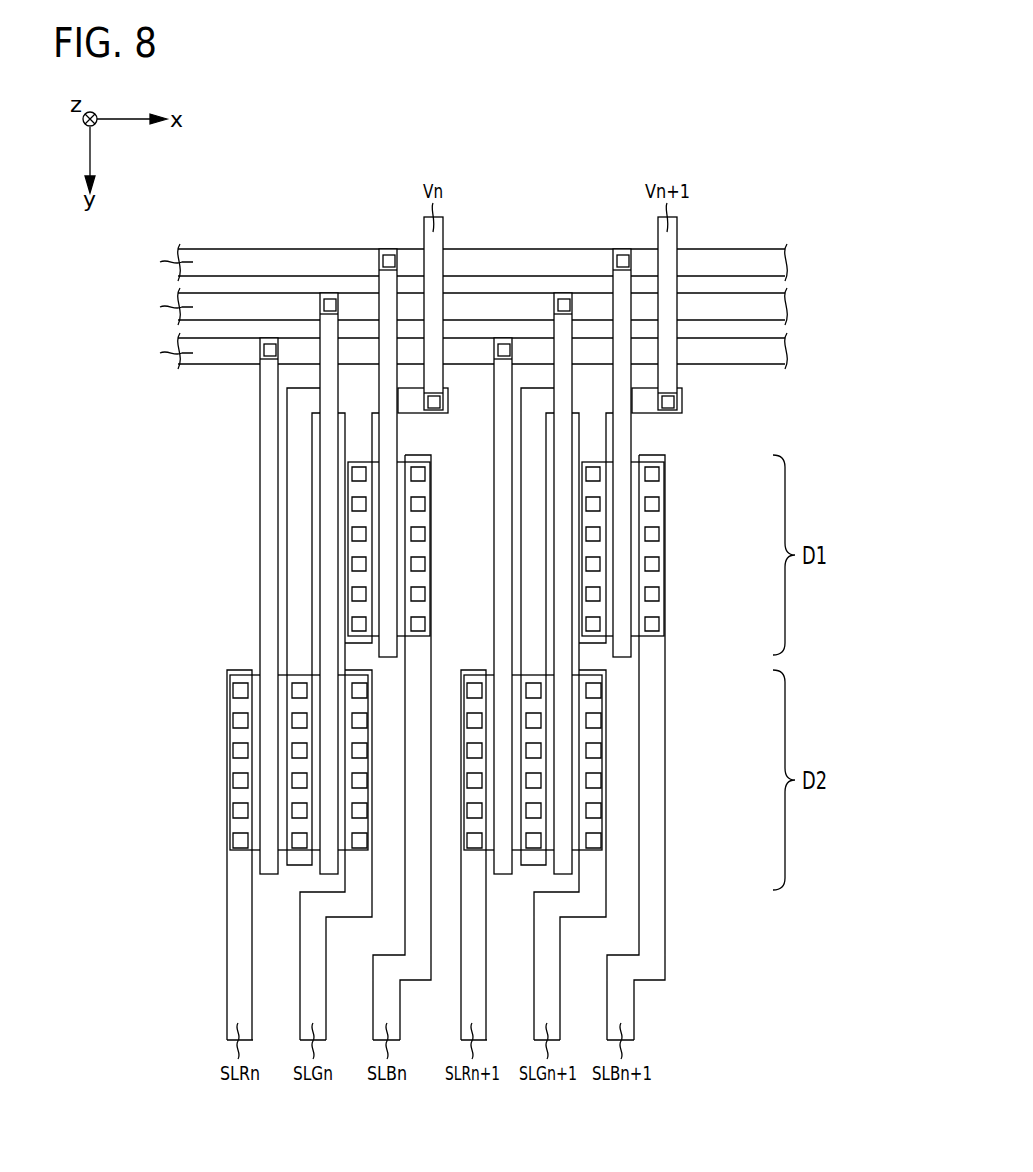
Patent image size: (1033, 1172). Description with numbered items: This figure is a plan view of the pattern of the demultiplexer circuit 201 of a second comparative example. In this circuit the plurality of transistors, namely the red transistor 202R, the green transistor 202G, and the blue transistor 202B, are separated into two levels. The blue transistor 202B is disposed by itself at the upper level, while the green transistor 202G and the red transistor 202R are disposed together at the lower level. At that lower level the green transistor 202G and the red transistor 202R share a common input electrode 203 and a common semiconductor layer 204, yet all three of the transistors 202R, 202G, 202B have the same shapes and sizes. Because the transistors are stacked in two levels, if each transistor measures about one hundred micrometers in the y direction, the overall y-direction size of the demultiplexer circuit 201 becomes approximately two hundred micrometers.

The demultiplexer circuit 201 is at (513, 168).
The blue transistor 202B is at (326, 547).
The green transistor 202G is at (353, 888).
The red transistor 202R is at (264, 890).
The input electrode 203 is at (298, 628).
The semiconductor layer 204 is at (240, 762).